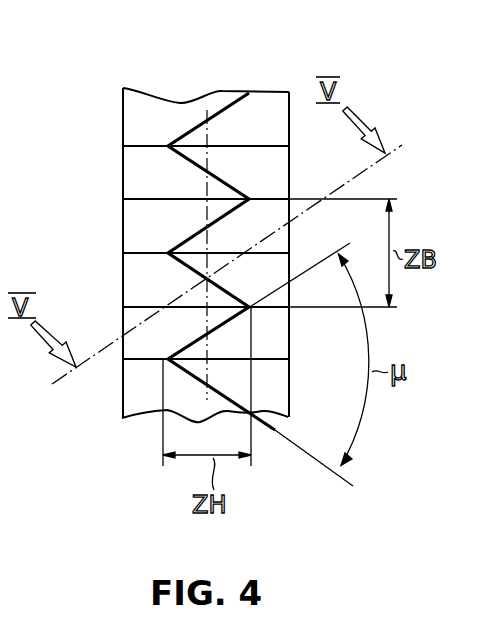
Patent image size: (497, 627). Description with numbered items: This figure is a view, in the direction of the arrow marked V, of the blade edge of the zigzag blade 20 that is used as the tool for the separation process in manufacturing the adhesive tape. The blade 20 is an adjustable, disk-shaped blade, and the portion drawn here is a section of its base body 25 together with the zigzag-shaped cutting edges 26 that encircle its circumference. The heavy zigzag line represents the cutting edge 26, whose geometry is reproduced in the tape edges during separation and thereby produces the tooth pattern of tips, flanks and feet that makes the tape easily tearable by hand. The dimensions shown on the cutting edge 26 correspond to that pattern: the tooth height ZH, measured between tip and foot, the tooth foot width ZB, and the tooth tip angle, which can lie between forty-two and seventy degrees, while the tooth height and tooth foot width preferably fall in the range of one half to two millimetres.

The zigzag blade 20 is at (104, 474).
The base body 25 is at (157, 239).
The cutting edges 26 is at (219, 106).